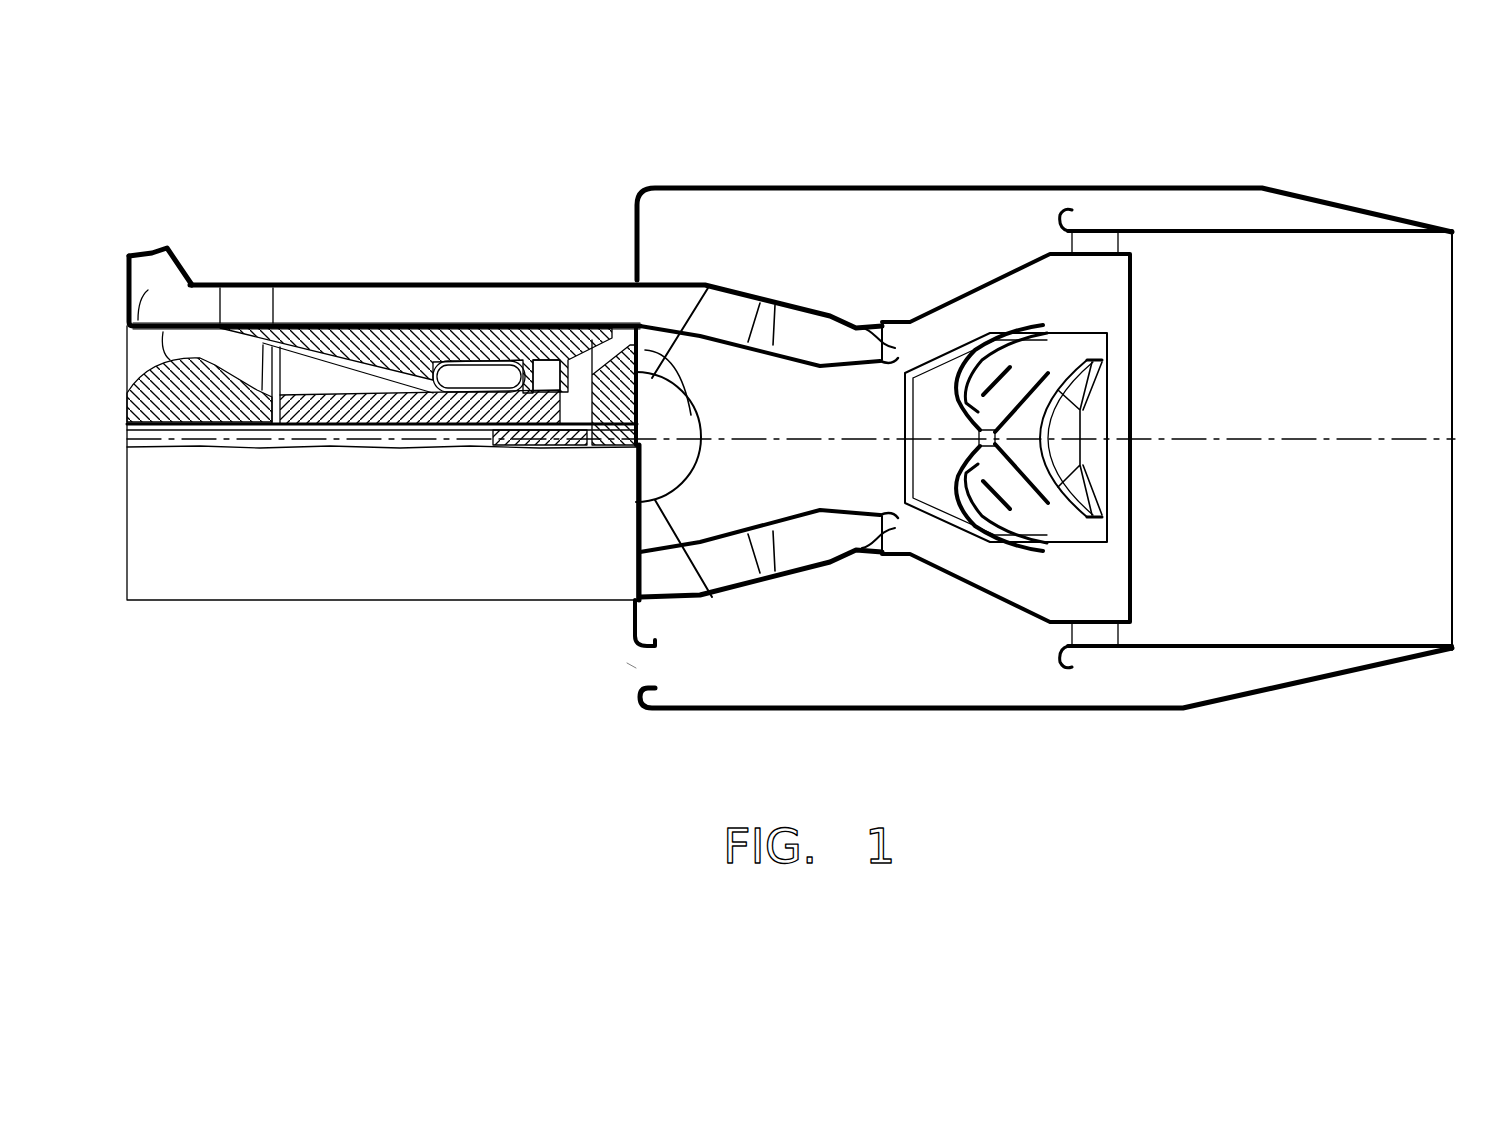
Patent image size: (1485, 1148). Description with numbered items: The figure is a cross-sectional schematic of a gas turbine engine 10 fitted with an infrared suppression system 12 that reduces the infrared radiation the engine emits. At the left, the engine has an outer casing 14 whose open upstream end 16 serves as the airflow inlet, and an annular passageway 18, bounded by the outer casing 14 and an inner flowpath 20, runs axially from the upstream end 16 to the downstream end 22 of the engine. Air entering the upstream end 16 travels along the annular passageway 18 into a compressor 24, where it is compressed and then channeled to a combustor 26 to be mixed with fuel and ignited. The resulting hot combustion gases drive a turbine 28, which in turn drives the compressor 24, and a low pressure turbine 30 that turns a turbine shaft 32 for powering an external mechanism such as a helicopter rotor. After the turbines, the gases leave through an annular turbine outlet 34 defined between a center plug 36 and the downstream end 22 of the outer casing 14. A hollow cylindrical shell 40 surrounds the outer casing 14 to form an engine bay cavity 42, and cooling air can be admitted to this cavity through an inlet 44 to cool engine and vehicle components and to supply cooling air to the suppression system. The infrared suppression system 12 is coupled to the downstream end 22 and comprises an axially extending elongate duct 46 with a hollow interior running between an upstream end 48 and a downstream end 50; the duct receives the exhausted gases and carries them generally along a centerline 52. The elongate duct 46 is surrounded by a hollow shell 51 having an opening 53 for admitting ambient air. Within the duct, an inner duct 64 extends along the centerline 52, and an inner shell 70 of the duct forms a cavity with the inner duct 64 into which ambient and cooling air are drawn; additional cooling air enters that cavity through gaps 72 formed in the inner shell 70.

The gas turbine engine 10 is at (488, 232).
The infrared suppression system 12 is at (872, 220).
The outer casing 14 is at (318, 320).
The open upstream end 16 is at (160, 297).
The annular passageway 18 is at (202, 357).
The inner flowpath 20 is at (165, 322).
The downstream end 22 is at (650, 522).
The compressor 24 is at (325, 389).
The combustor 26 is at (481, 394).
The turbine 28 is at (538, 360).
The low pressure turbine 30 is at (689, 418).
The turbine shaft 32 is at (160, 448).
The annular turbine outlet 34 is at (644, 346).
The center plug 36 is at (686, 472).
The hollow cylindrical shell 40 is at (290, 284).
The engine bay cavity 42 is at (462, 315).
The inlet 44 is at (155, 262).
The elongate duct 46 is at (824, 313).
The upstream end of the duct 48 is at (714, 258).
The downstream end of the duct 50 is at (1453, 208).
The hollow shell 51 is at (850, 718).
The centerline 52 is at (1375, 437).
The opening 53 is at (627, 663).
The inner duct 64 is at (763, 357).
The inner shell 70 is at (783, 306).
The gaps 72 is at (864, 300).